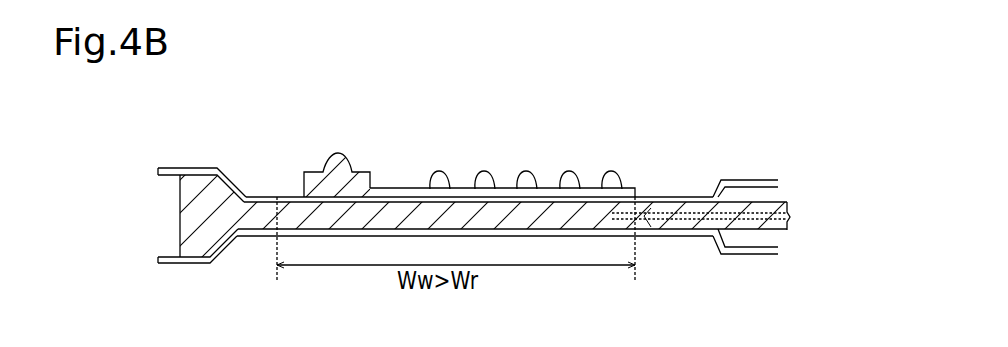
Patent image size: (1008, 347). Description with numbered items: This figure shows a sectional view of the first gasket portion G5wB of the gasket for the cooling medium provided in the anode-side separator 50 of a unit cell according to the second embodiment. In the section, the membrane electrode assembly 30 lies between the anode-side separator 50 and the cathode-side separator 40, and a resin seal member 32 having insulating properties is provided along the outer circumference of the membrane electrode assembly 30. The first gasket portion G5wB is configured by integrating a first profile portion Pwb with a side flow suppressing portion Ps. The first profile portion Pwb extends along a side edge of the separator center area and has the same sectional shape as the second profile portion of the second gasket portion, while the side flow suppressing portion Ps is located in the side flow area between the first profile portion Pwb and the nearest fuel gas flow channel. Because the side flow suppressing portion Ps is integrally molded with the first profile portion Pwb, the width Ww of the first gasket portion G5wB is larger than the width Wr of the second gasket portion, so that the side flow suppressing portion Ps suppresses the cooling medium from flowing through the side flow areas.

The membrane electrode assembly 30 is at (789, 216).
The resin seal member 32 is at (182, 220).
The cathode-side separator 40 is at (778, 252).
The anode-side separator 50 is at (778, 181).
The first profile portion Pwb is at (303, 168).
The side flow suppressing portion Ps is at (483, 157).
The first gasket portion G5wB is at (645, 132).